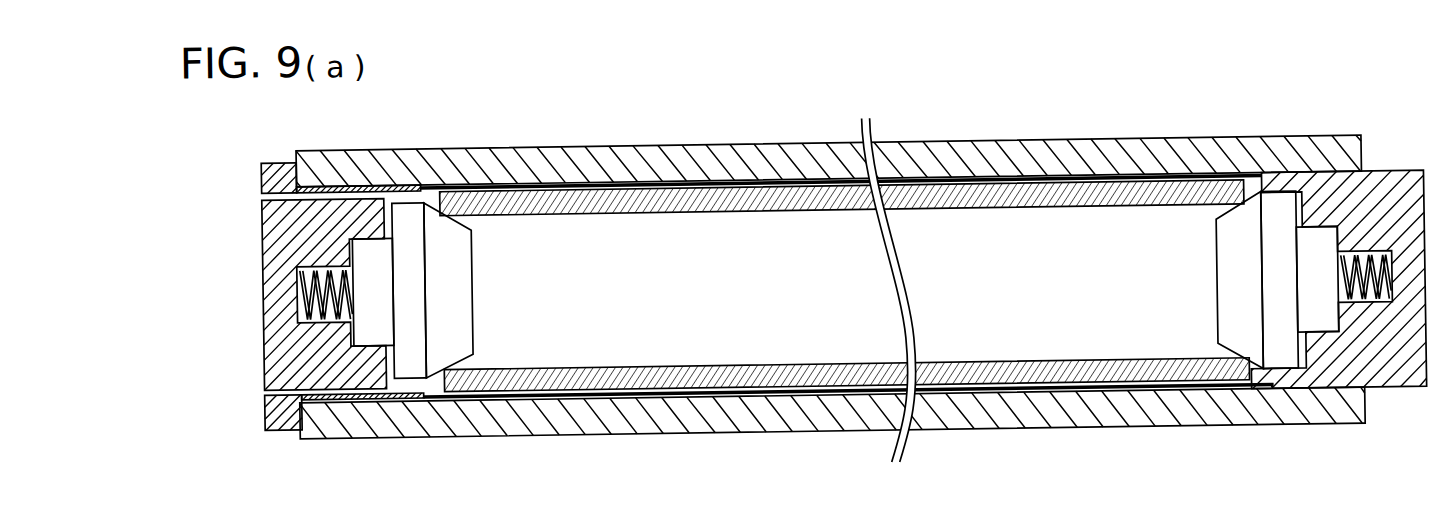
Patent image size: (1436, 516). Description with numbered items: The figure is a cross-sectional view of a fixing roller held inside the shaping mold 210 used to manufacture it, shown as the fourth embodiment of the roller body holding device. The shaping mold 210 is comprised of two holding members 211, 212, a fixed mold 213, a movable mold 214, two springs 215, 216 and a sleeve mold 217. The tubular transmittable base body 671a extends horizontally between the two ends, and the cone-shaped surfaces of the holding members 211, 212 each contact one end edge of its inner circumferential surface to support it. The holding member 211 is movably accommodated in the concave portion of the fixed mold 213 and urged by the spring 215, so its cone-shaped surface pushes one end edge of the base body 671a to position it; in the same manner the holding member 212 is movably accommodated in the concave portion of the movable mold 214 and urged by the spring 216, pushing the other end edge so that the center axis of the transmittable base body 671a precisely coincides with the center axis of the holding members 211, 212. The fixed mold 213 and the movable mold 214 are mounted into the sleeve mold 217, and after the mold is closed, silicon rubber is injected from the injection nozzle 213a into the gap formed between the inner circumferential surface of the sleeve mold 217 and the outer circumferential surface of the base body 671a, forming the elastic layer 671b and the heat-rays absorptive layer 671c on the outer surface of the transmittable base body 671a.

The shaping mold 210 is at (830, 253).
The sleeve mold 217 is at (987, 143).
The holding member 211 is at (473, 283).
The holding member 212 is at (1218, 287).
The fixed mold 213 is at (280, 156).
The injection nozzle 213a is at (262, 384).
The movable mold 214 is at (1393, 179).
The spring 215 is at (318, 307).
The spring 216 is at (1368, 306).
The transmittable base body 671a is at (812, 383).
The elastic layer 671b is at (722, 391).
The heat-rays absorptive layer 671c is at (648, 396).